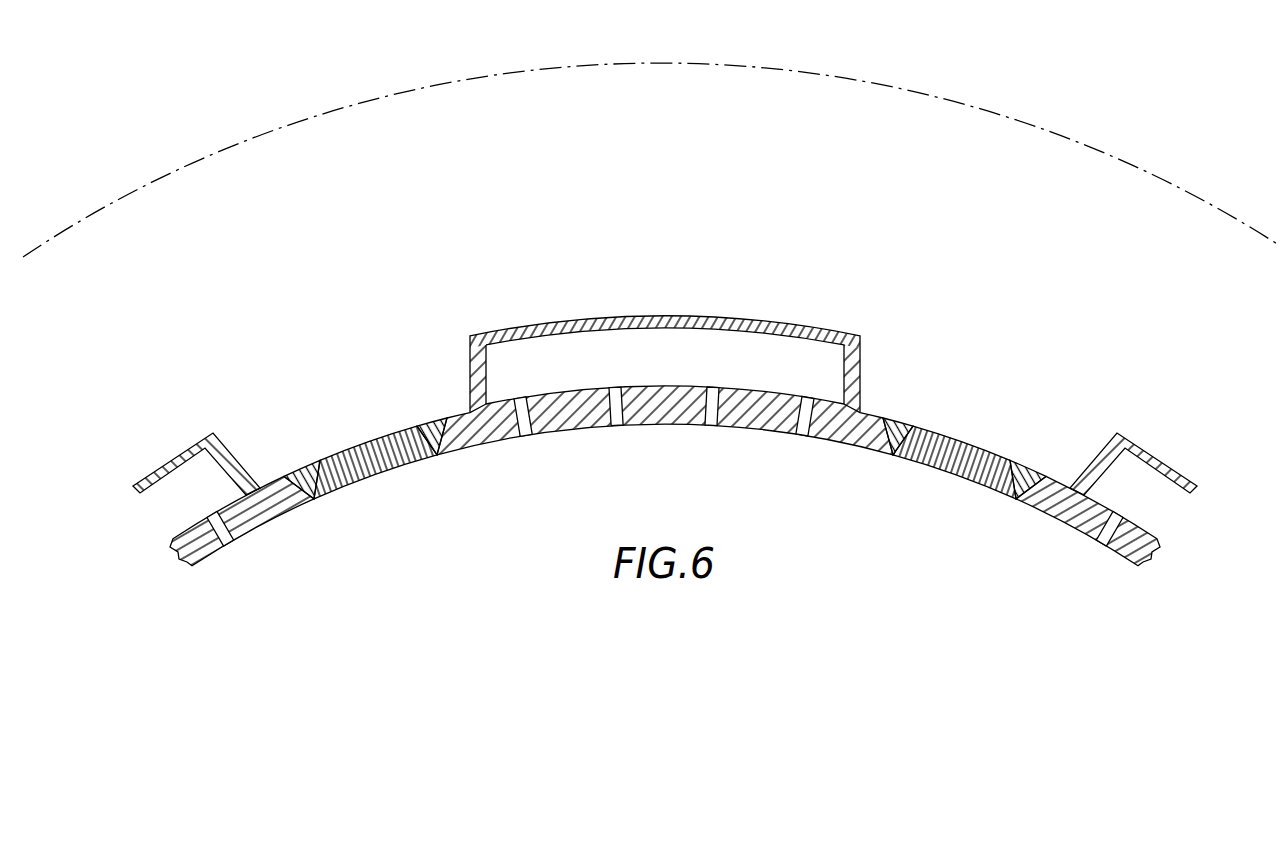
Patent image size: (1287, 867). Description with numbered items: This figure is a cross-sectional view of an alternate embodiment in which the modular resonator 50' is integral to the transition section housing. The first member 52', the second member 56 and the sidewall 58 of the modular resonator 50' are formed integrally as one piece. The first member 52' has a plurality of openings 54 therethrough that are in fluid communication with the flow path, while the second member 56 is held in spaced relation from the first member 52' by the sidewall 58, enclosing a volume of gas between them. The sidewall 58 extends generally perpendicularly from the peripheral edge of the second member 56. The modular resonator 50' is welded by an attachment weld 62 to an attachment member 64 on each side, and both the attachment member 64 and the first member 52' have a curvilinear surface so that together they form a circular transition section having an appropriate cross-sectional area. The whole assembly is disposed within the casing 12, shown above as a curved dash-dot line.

The casing 12 is at (966, 104).
The modular resonator 50' is at (690, 320).
The first member 52' is at (665, 428).
The openings 54 is at (619, 422).
The second member 56 is at (697, 318).
The sidewall 58 is at (861, 363).
The attachment weld 62 is at (424, 421).
The attachment member 64 is at (953, 473).